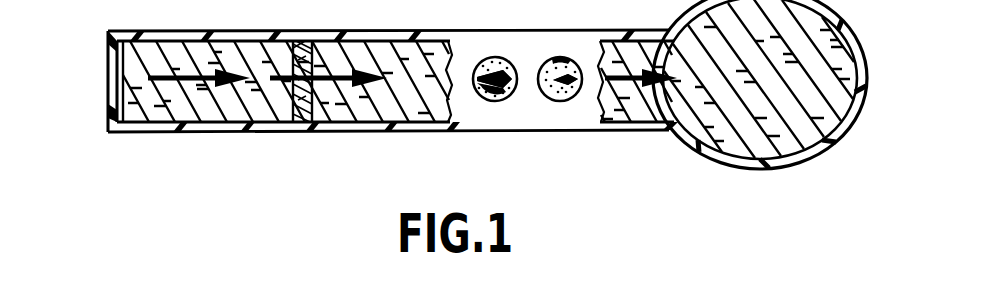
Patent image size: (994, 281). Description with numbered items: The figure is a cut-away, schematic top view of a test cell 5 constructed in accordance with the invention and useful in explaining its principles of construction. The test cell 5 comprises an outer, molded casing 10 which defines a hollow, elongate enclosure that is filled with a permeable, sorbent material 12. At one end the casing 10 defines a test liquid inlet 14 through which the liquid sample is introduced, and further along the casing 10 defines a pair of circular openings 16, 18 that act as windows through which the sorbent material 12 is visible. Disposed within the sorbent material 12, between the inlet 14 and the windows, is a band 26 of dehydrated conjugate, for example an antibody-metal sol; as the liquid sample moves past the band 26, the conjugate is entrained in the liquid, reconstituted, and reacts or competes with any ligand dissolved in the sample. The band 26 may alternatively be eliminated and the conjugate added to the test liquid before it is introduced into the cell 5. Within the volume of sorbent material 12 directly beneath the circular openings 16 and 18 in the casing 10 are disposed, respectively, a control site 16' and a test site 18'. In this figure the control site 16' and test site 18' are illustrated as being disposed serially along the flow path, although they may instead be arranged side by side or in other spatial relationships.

The test cell 5 is at (820, 182).
The outer molded casing 10 is at (258, 133).
The permeable sorbent material 12 is at (357, 50).
The test liquid inlet 14 is at (108, 91).
The circular opening 16 is at (489, 109).
The control site 16' is at (506, 62).
The circular opening 18 is at (569, 50).
The test site 18' is at (555, 118).
The band of dehydrated conjugate 26 is at (303, 116).